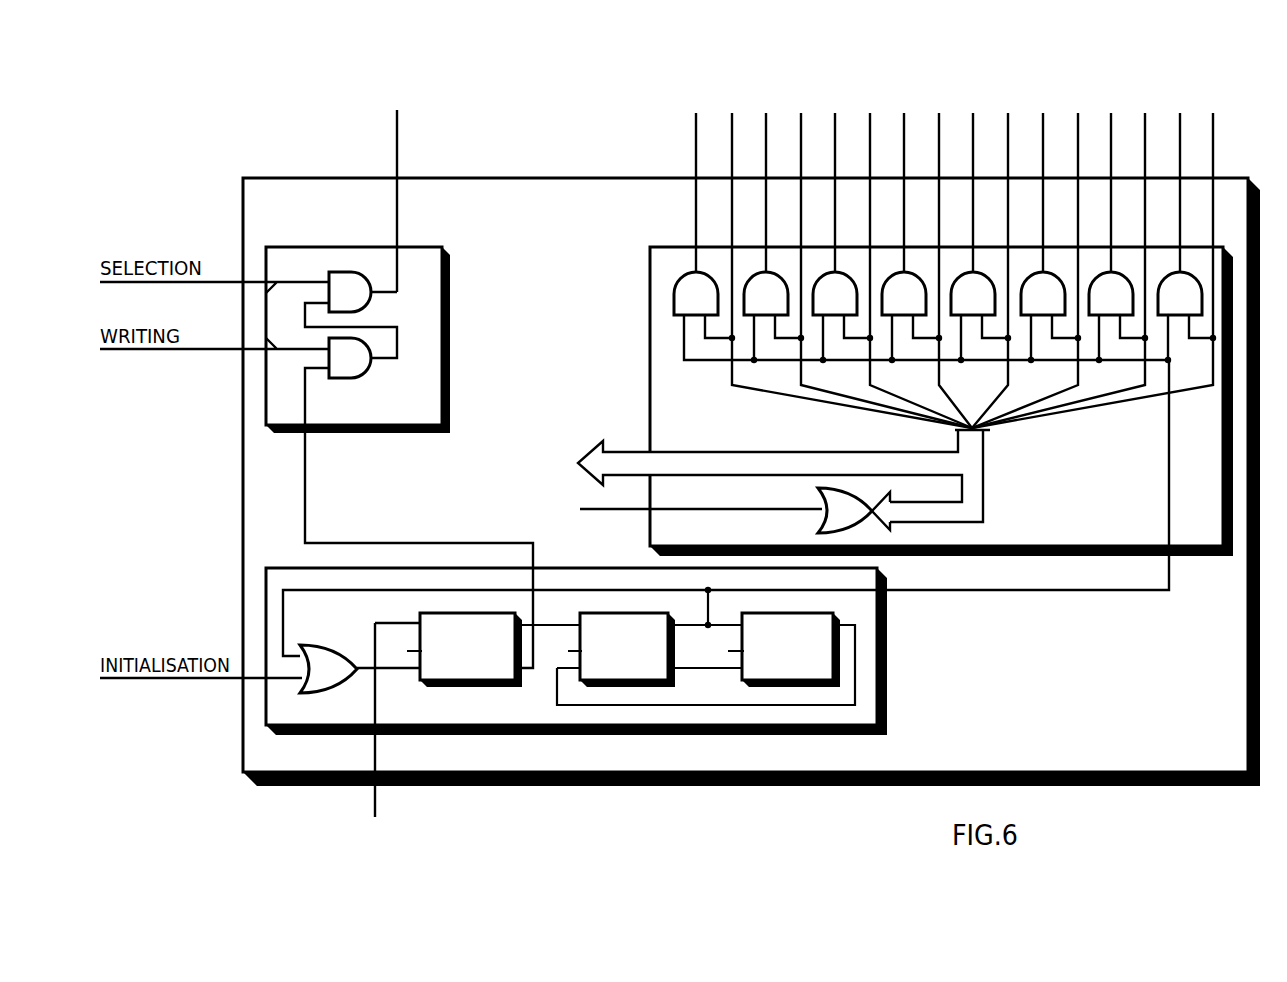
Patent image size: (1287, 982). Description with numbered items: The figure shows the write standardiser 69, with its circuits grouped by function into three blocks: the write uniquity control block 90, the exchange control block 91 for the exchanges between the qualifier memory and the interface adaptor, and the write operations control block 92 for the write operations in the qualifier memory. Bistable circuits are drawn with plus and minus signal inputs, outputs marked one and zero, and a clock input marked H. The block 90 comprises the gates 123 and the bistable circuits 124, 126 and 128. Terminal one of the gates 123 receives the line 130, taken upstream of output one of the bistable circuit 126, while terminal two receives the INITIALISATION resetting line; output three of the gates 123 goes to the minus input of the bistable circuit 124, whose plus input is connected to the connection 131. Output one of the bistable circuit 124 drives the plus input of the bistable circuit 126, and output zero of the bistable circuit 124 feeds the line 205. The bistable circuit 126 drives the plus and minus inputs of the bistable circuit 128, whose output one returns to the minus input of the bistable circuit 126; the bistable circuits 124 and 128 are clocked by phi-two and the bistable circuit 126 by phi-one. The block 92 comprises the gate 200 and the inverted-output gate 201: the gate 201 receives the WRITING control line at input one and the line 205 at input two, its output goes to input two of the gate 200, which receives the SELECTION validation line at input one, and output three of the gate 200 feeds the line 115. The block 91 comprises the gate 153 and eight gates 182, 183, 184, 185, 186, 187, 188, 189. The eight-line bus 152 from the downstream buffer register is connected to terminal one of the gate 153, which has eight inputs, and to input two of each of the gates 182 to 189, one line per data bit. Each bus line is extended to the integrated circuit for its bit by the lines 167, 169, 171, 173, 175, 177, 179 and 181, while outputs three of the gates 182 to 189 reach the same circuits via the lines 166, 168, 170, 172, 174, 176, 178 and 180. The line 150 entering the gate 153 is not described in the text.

The write standardiser 69 is at (310, 178).
The write operations control block 92 is at (310, 248).
The line 115 is at (398, 188).
The gate 200 is at (373, 301).
The gate having an inverted output 201 is at (373, 367).
The line 205 is at (466, 543).
The exchange control block 91 is at (650, 274).
The line 166 is at (696, 179).
The line 167 is at (845, 257).
The line 168 is at (766, 179).
The line 169 is at (879, 257).
The line 170 is at (835, 179).
The line 171 is at (914, 257).
The line 172 is at (904, 179).
The line 173 is at (948, 257).
The line 174 is at (973, 179).
The line 175 is at (997, 257).
The line 176 is at (1043, 179).
The line 177 is at (1032, 257).
The line 178 is at (1111, 179).
The line 179 is at (1065, 257).
The line 180 is at (1180, 179).
The line 181 is at (1099, 257).
The gate 182 is at (694, 272).
The gate 183 is at (764, 272).
The gate 184 is at (833, 272).
The gate 185 is at (902, 272).
The gate 186 is at (971, 272).
The gate 187 is at (1041, 272).
The gate 188 is at (1109, 272).
The gate 189 is at (1178, 272).
The bus 152 is at (626, 452).
The gate 153 is at (818, 492).
The input line to gate 153 150 is at (632, 509).
The line 130 is at (1062, 590).
The write uniquity control block 90 is at (887, 713).
The gates 123 is at (322, 645).
The bistable circuit 124 is at (464, 612).
The bistable circuit 126 is at (624, 612).
The bistable circuit 128 is at (786, 612).
The connection 131 is at (377, 808).